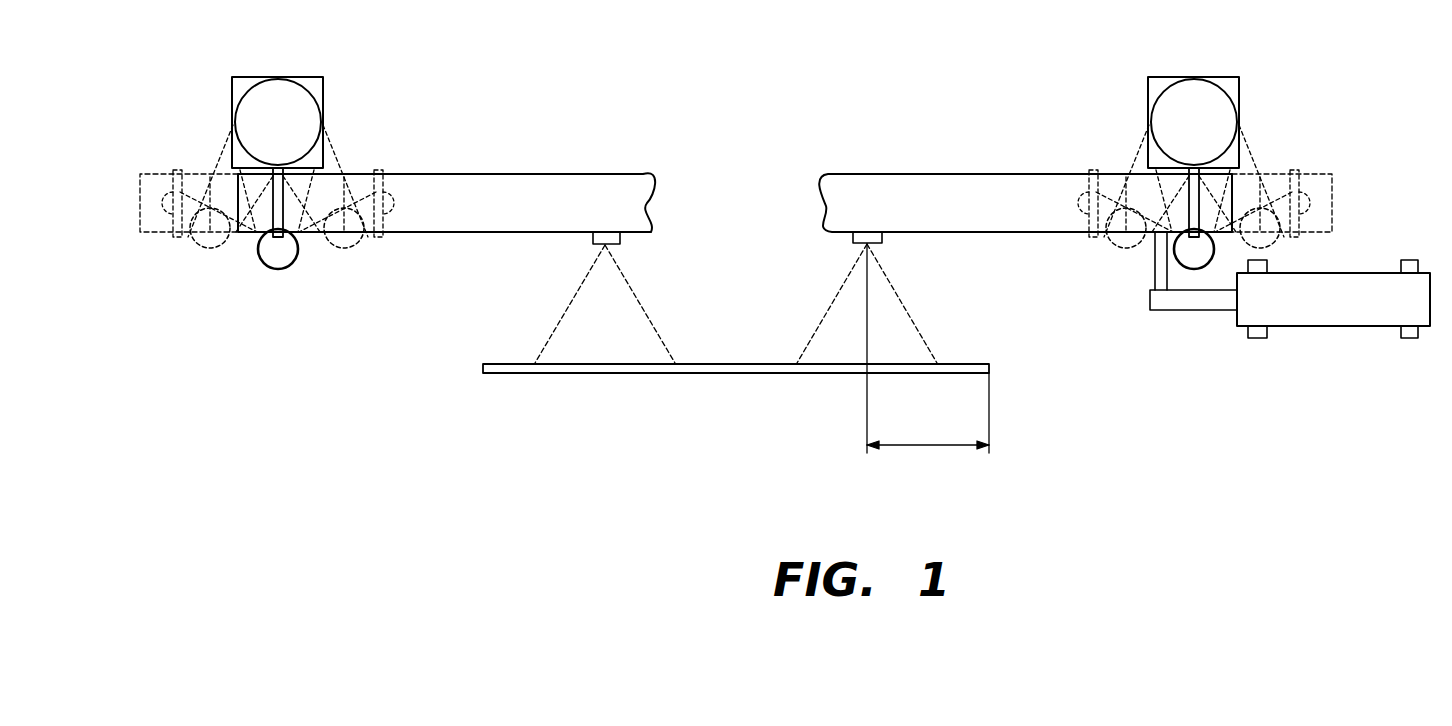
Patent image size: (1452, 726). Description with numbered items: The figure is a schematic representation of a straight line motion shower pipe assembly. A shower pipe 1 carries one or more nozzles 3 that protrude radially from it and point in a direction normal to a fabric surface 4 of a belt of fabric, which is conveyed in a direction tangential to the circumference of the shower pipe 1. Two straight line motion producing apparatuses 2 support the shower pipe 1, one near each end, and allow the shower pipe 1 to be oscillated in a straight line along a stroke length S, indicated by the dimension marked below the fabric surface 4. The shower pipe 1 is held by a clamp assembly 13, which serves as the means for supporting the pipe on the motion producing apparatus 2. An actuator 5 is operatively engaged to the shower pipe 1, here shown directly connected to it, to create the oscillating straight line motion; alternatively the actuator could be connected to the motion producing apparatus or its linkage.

The shower pipe 1 is at (516, 200).
The straight line motion producing apparatus 2 is at (276, 103).
The nozzle 3 is at (594, 238).
The fabric surface 4 is at (502, 363).
The actuator 5 is at (1333, 313).
The clamp assembly 13 is at (1193, 203).
The stroke length S is at (928, 348).